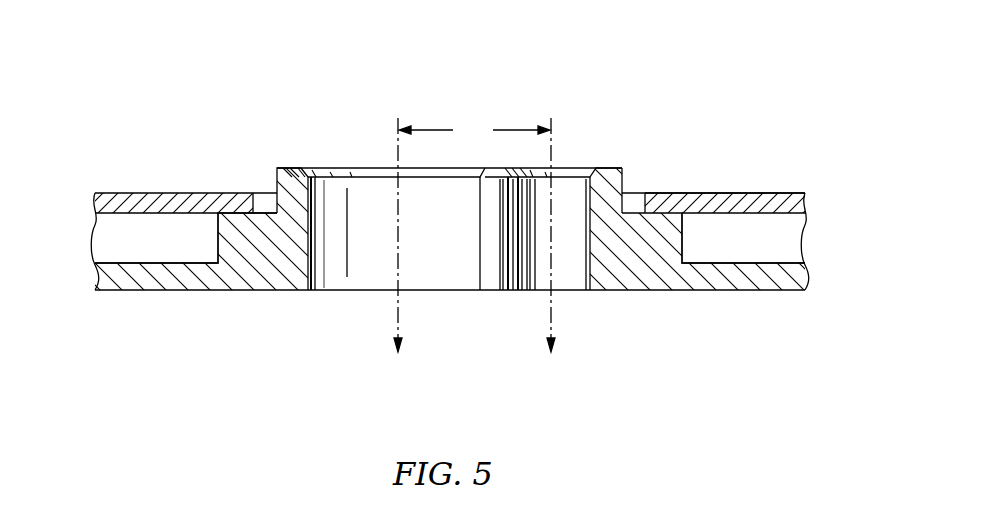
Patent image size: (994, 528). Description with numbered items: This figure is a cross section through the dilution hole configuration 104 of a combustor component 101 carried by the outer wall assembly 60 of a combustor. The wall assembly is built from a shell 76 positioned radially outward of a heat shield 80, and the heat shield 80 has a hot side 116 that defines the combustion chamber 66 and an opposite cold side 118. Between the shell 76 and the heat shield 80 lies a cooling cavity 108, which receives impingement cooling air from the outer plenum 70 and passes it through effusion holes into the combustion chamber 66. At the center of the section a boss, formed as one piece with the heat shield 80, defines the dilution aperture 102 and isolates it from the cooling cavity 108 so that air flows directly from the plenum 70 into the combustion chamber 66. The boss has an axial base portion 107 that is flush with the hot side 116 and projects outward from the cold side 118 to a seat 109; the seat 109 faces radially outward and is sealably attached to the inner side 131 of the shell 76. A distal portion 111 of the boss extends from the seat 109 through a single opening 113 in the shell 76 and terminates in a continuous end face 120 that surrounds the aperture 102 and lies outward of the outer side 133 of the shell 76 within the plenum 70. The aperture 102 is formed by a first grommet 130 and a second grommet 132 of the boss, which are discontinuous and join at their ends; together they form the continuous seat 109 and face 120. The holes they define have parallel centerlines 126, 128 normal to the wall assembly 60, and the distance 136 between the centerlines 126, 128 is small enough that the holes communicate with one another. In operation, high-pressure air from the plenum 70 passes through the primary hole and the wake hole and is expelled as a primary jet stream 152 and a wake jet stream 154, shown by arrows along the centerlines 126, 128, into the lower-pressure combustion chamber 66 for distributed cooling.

The outer wall assembly 60 is at (76, 247).
The combustion chamber 66 is at (311, 369).
The outer plenum 70 is at (340, 102).
The shell 76 is at (674, 184).
The heat shield 80 is at (647, 300).
The combustor component 101 is at (118, 178).
The dilution aperture 102 is at (456, 300).
The dilution hole configuration 104 is at (583, 152).
The axial base portion 107 is at (667, 238).
The cooling cavity 108 is at (178, 252).
The seat 109 is at (237, 200).
The distal portion 111 is at (610, 182).
The opening 113 is at (263, 200).
The hot side 116 is at (217, 290).
The cold side 118 is at (710, 263).
The end face 120 is at (290, 167).
The centerline 126 is at (398, 118).
The centerline 128 is at (551, 118).
The first grommet 130 is at (300, 253).
The inner side 131 is at (793, 218).
The second grommet 132 is at (608, 258).
The outer side 133 is at (770, 192).
The distance 136 is at (474, 130).
The primary jet stream 152 is at (398, 332).
The wake jet stream 154 is at (551, 332).